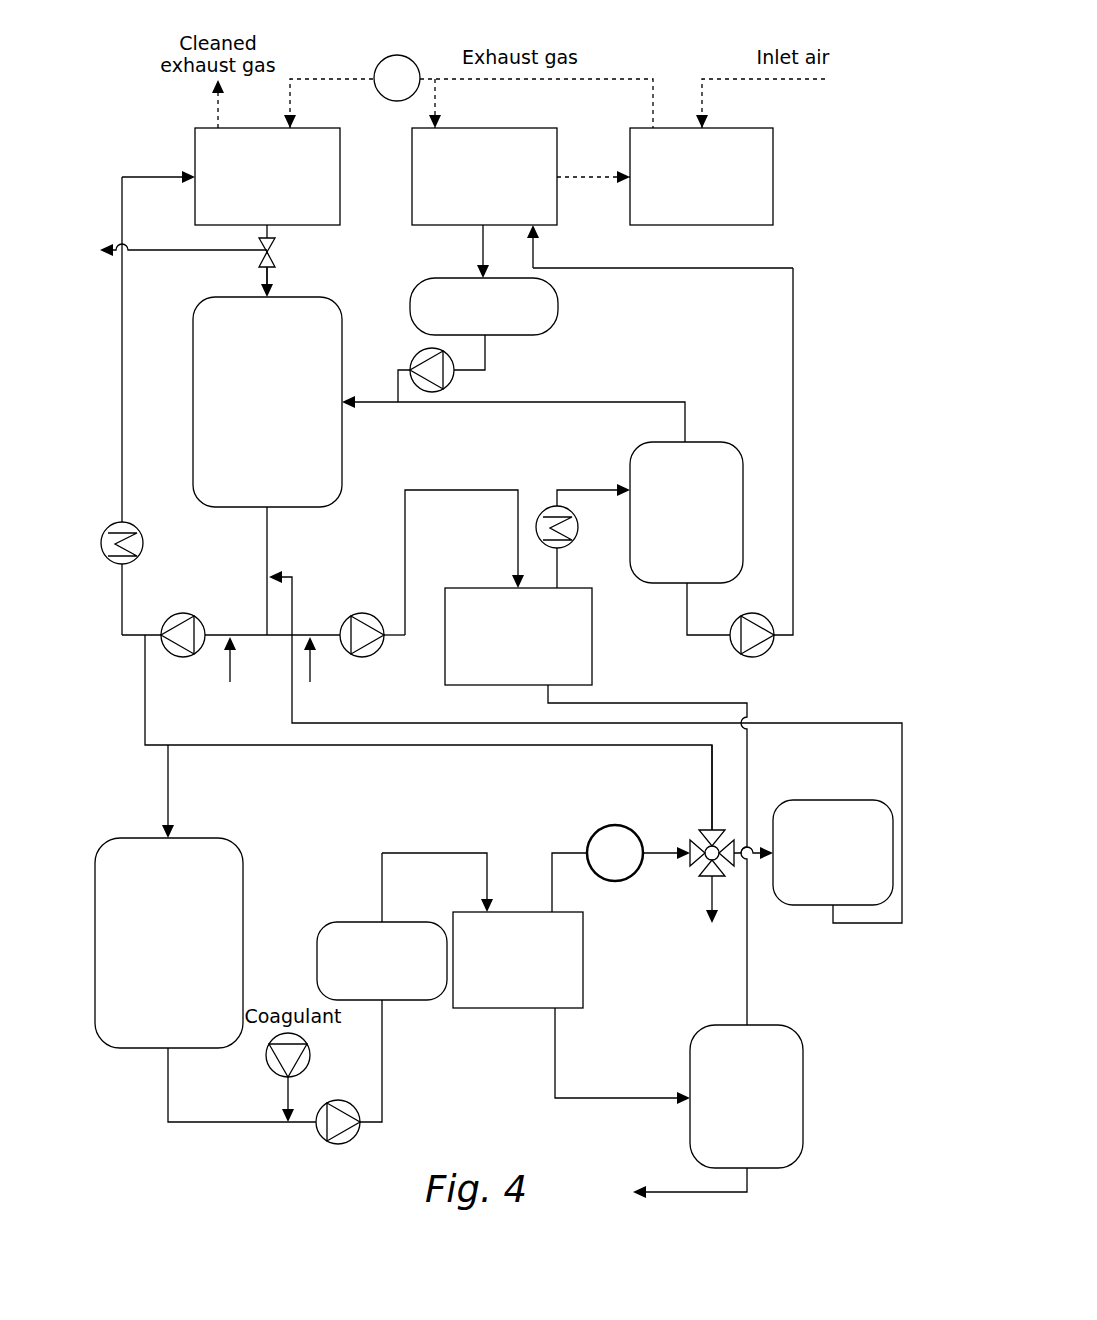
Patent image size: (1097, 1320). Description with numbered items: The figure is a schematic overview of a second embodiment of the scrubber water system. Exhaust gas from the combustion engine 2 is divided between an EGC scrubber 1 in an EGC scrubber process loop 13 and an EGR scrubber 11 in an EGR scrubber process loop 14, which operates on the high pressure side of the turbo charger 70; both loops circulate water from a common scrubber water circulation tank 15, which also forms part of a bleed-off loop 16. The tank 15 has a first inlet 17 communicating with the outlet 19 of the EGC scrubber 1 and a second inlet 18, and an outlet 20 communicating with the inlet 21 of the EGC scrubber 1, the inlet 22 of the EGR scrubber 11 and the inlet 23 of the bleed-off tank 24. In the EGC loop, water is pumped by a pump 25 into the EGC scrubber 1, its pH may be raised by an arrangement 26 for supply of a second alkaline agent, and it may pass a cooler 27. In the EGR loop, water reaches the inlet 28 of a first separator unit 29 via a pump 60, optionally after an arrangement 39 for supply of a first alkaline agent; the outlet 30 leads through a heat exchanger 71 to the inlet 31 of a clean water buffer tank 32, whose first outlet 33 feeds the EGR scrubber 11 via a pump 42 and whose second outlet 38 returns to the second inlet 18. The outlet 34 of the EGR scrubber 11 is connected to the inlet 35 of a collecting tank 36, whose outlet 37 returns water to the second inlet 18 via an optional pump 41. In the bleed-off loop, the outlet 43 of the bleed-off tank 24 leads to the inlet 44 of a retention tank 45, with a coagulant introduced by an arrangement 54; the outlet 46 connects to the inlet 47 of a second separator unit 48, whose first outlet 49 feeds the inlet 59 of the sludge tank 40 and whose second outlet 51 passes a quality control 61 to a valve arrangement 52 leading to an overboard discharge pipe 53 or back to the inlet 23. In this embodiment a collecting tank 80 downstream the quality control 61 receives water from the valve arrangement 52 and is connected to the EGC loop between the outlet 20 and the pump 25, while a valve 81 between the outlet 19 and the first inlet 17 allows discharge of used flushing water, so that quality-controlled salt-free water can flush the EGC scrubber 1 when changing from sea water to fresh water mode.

The EGC scrubber 1 is at (330, 128).
The combustion engine 2 is at (760, 128).
The EGR scrubber 11 is at (545, 128).
The EGC scrubber process loop 13 is at (124, 278).
The EGR scrubber process loop 14 is at (795, 305).
The scrubber water circulation tank 15 is at (332, 297).
The bleed-off loop 16 is at (166, 776).
The first inlet 17 is at (262, 294).
The second inlet 18 is at (350, 405).
The outlet 19 is at (275, 235).
The outlet 20 is at (270, 510).
The inlet 21 is at (192, 172).
The inlet 22 is at (538, 232).
The inlet 23 is at (172, 835).
The bleed-off tank 24 is at (244, 862).
The pump 25 is at (188, 612).
The arrangement for supply of a second alkaline agent 26 is at (200, 655).
The cooler 27 is at (143, 540).
The inlet 28 is at (505, 585).
The first separator unit 29 is at (594, 640).
The outlet 30 is at (560, 572).
The inlet 31 is at (624, 488).
The clean water buffer tank 32 is at (730, 444).
The first outlet 33 is at (685, 590).
The outlet 34 is at (478, 240).
The inlet 35 is at (488, 275).
The collecting tank 36 is at (558, 318).
The outlet 37 is at (488, 345).
The second outlet 38 is at (692, 440).
The arrangement for supply of a first alkaline agent 39 is at (345, 628).
The sludge tank 40 is at (775, 1025).
The pump 41 is at (412, 362).
The pump 42 is at (770, 652).
The outlet 43 is at (166, 1055).
The inlet 44 is at (405, 1000).
The retention tank 45 is at (316, 948).
The outlet 46 is at (385, 920).
The inlet 47 is at (485, 908).
The second separator unit 48 is at (584, 945).
The first outlet 49 is at (557, 1012).
The second outlet 51 is at (550, 905).
The valve arrangement 52 is at (692, 862).
The overboard discharge pipe 53 is at (708, 900).
The arrangement for the supply of a coagulant 54 is at (285, 1078).
The inlet 59 is at (690, 1095).
The pump 60 is at (375, 655).
The quality control 61 is at (622, 826).
The turbo charger 70 is at (374, 72).
The heat exchanger 71 is at (545, 512).
The collecting tank 80 is at (818, 800).
The valve 81 is at (274, 268).